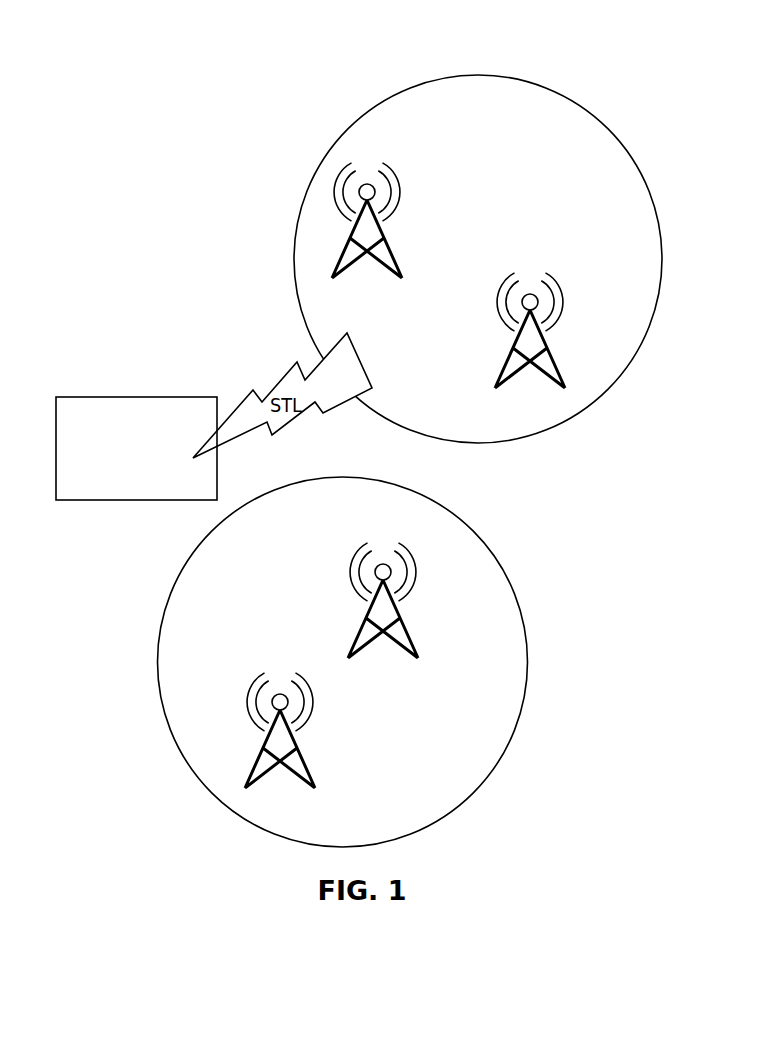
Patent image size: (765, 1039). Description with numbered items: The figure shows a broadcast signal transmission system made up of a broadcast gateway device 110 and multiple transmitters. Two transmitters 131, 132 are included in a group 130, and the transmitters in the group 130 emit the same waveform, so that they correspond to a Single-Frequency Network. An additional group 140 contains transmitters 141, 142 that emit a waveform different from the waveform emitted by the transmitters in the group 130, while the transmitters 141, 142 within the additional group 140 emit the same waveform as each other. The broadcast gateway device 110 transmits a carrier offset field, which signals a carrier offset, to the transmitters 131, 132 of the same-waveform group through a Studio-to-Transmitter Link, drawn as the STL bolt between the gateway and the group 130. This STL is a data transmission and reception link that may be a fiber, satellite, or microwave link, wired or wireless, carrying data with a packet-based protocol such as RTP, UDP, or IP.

The broadcast gateway device 110 is at (137, 397).
The group 130 is at (478, 75).
The transmitter 131 is at (393, 240).
The transmitter 132 is at (553, 351).
The additional group 140 is at (528, 662).
The transmitter 141 is at (408, 620).
The transmitter 142 is at (303, 750).